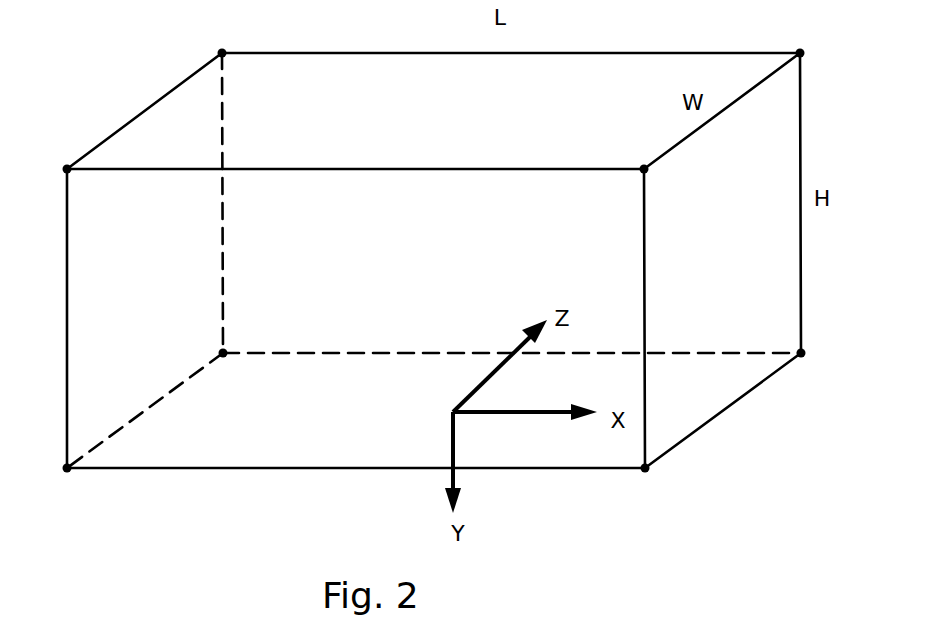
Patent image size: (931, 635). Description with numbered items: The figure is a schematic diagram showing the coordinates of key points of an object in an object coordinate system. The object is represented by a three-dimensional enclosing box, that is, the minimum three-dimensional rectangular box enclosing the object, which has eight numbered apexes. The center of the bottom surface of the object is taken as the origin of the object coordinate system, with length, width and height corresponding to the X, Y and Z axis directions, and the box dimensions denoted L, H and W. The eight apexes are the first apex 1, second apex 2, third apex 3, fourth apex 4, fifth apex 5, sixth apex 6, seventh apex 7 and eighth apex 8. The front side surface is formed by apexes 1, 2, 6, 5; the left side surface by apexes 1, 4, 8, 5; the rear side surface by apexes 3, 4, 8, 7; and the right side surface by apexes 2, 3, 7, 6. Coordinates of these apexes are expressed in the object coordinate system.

The first apex 1 is at (814, 362).
The second apex 2 is at (434, 274).
The third apex 3 is at (66, 483).
The fourth apex 4 is at (221, 368).
The fifth apex 5 is at (808, 42).
The sixth apex 6 is at (658, 180).
The seventh apex 7 is at (58, 168).
The eighth apex 8 is at (211, 41).